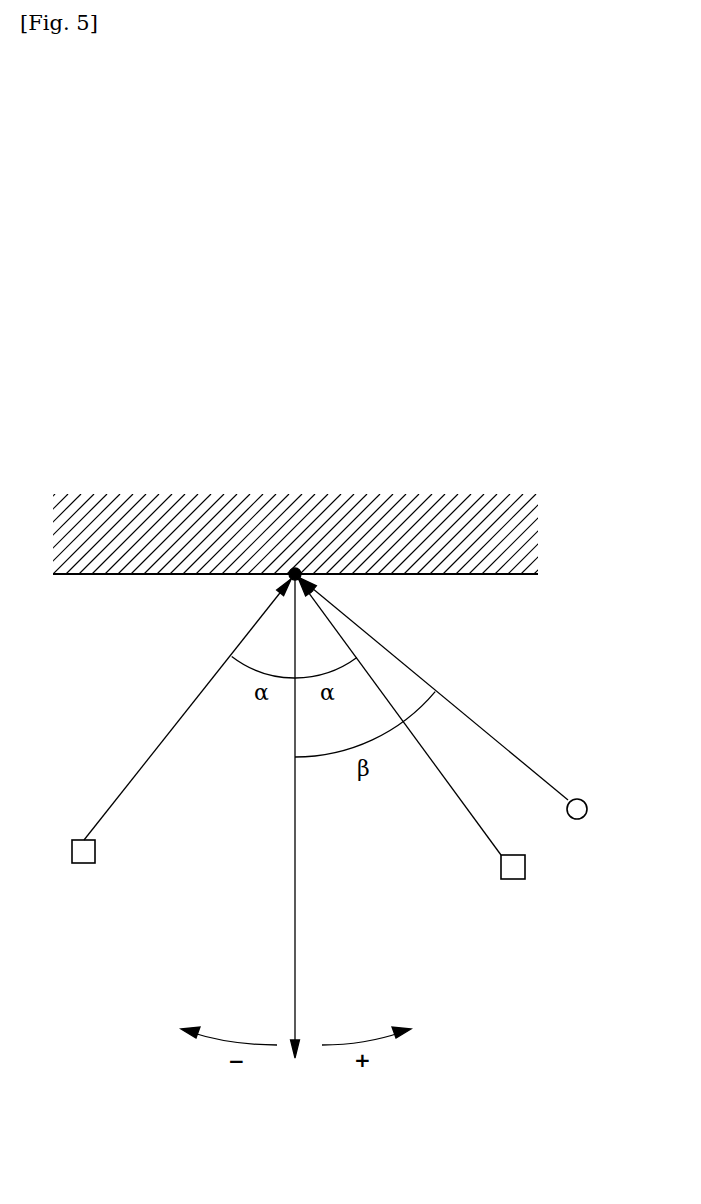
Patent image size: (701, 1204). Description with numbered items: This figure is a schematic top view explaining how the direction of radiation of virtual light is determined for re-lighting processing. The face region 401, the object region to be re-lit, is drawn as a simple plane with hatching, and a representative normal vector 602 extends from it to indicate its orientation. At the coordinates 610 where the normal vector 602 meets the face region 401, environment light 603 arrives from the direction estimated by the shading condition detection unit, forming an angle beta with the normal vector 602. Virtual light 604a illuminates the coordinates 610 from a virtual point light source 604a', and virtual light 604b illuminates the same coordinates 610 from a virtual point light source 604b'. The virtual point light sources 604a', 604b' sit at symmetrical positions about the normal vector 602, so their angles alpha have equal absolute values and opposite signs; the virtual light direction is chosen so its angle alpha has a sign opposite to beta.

The face region 401 is at (538, 574).
The coordinates 610 is at (292, 566).
The normal vector 602 is at (295, 968).
The environment light 603 is at (535, 770).
The virtual light 604a is at (400, 717).
The virtual point light source 604a' is at (566, 888).
The virtual light 604b is at (179, 709).
The virtual point light source 604b' is at (137, 873).